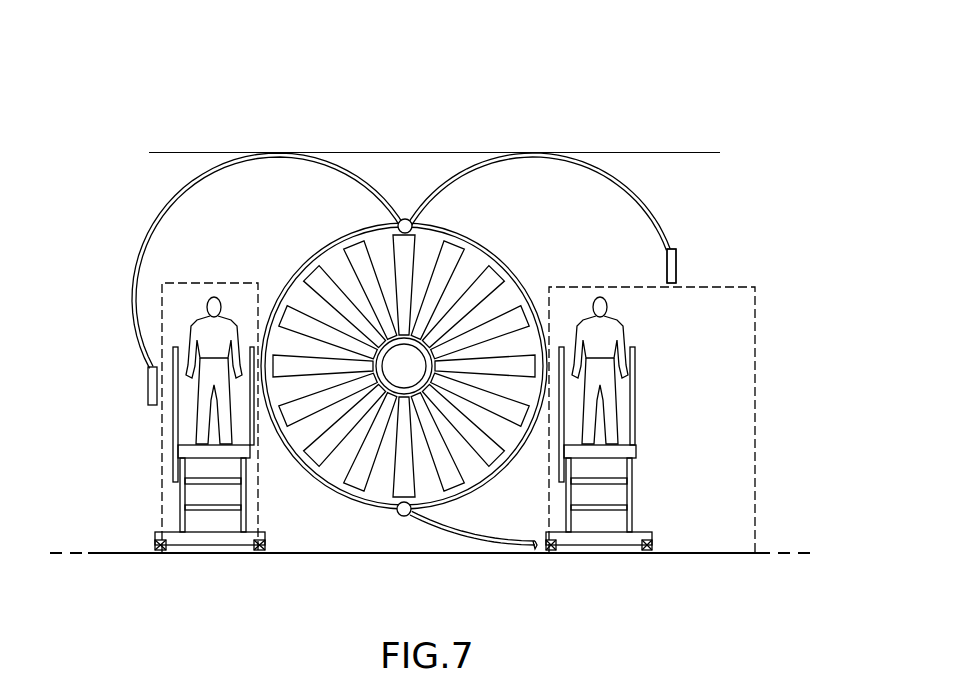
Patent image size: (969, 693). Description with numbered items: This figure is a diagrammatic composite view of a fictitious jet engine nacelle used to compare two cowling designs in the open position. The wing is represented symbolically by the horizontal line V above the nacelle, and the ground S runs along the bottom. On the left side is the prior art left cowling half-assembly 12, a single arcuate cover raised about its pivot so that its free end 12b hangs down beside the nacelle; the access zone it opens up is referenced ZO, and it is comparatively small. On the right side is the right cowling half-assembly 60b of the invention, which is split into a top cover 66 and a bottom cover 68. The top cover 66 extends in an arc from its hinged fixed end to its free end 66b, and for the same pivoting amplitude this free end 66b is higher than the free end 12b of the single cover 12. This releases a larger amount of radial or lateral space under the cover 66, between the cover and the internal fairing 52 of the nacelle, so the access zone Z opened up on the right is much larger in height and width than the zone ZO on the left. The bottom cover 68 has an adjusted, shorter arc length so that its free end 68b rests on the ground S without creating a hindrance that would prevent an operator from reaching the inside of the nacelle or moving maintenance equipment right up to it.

The wing V is at (155, 152).
The ground S is at (104, 552).
The prior art left cowling half-assembly 12 is at (134, 258).
The free end of the single cover 12b is at (148, 370).
The top cover 66 is at (636, 190).
The right cowling half-assembly 60b is at (682, 238).
The free end of the top cover 66b is at (676, 252).
The internal fairing 52 is at (522, 268).
The bottom cover 68 is at (451, 541).
The free end of the bottom cover 68b is at (541, 548).
The access zone of the prior art ZO is at (160, 450).
The access zone Z is at (755, 456).